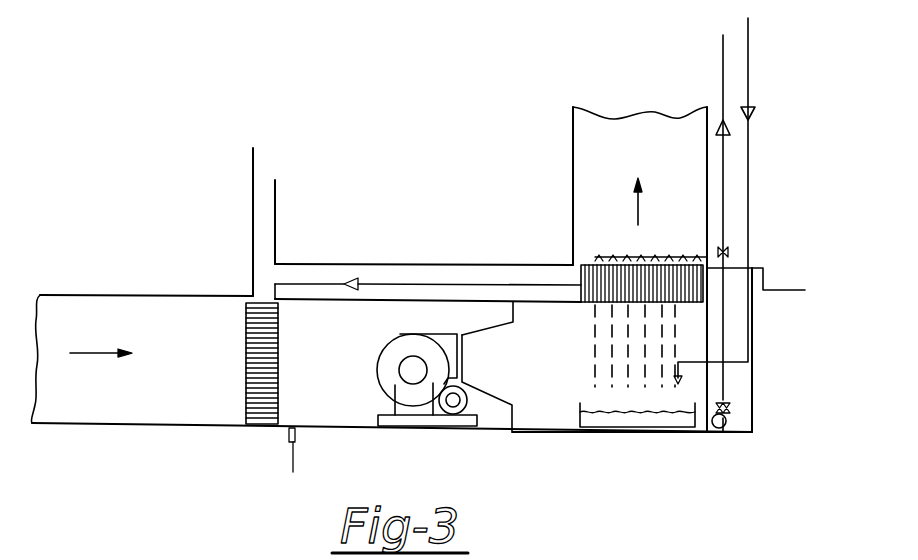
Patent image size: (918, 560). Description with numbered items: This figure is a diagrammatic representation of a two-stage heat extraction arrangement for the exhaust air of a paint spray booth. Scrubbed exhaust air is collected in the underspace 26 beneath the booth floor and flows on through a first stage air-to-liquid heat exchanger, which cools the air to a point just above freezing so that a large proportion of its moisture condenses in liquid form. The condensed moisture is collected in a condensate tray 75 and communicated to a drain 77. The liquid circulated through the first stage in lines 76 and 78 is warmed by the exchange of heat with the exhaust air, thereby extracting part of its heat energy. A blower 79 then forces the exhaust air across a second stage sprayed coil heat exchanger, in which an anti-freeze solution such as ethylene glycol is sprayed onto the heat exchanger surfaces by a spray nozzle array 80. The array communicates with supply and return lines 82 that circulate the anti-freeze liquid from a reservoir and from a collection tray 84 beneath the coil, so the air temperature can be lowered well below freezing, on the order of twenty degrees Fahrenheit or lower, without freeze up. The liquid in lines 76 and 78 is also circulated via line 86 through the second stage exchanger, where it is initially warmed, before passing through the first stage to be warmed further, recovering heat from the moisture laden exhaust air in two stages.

The underspace 26 is at (178, 272).
The condensate tray 75 is at (210, 421).
The line 76 is at (252, 229).
The drain 77 is at (297, 437).
The line 78 is at (302, 282).
The blower 79 is at (379, 355).
The spray nozzle array 80 is at (636, 257).
The supply and return lines 82 is at (748, 207).
The collection tray 84 is at (578, 412).
The line 86 is at (462, 232).